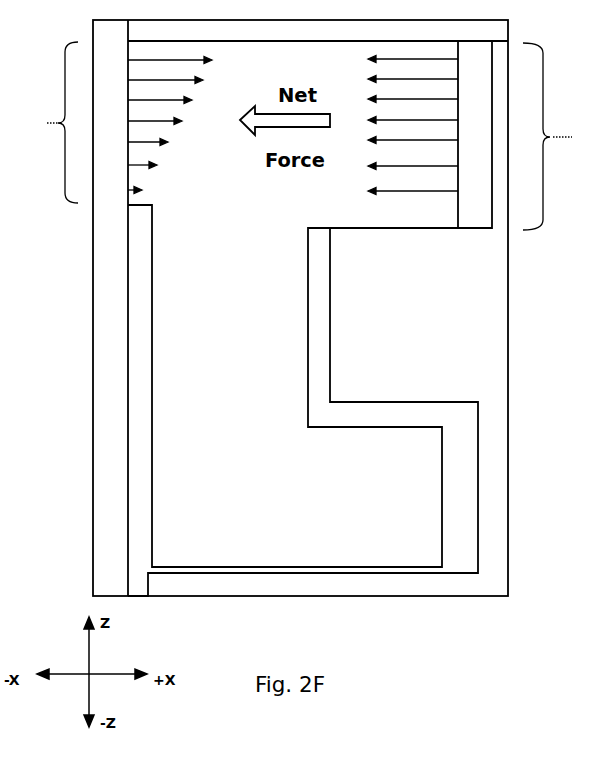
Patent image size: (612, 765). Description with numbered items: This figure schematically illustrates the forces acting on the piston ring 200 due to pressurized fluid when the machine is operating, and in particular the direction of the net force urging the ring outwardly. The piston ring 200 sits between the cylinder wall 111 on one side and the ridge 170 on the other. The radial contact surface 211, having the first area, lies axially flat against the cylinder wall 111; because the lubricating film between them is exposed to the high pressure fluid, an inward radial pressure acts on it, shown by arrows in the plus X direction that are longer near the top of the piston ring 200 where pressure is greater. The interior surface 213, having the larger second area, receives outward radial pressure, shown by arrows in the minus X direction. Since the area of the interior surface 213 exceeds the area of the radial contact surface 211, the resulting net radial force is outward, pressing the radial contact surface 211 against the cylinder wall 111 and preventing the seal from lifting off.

The cylinder wall 111 is at (127, 327).
The crevice reduction U-Cup piston ring 200 is at (243, 305).
The ridge 170 is at (417, 321).
The radial contact surface of piston ring 211 is at (110, 122).
The inner receiving surface of piston ring 213 is at (488, 136).